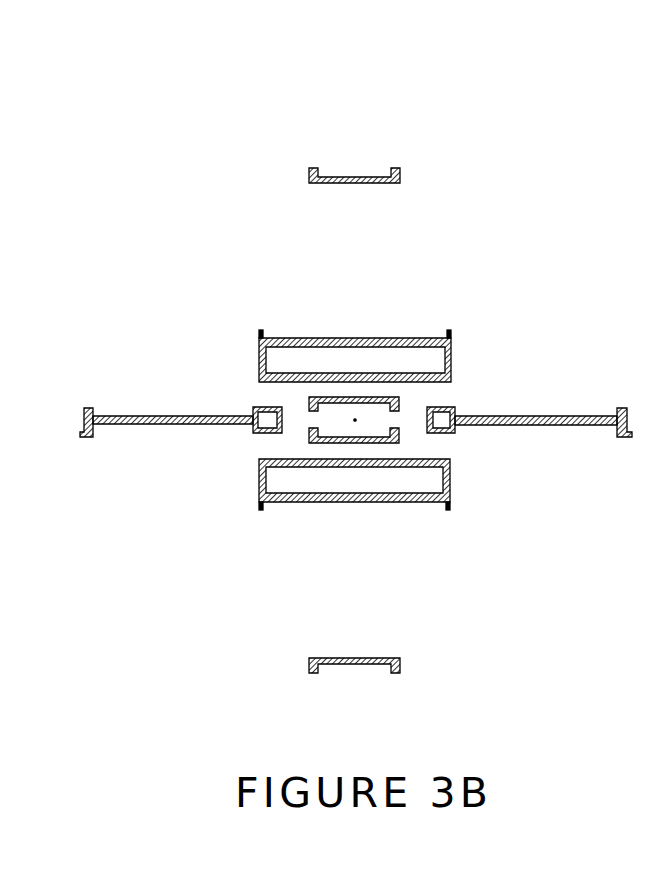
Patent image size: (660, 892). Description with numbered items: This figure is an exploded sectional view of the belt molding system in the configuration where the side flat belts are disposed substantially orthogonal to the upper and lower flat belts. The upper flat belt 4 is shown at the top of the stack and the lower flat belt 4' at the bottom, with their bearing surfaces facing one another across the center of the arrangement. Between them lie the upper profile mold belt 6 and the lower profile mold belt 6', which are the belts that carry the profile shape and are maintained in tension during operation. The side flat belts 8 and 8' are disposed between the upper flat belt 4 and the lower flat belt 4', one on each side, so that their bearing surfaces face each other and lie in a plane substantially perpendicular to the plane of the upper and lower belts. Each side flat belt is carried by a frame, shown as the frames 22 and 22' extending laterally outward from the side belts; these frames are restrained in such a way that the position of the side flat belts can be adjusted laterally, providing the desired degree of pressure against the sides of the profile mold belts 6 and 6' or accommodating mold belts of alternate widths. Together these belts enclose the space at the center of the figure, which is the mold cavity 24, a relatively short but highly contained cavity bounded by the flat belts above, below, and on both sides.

The upper flat belt 4 is at (319, 345).
The lower flat belt 4' is at (386, 494).
The upper profile mold belt 6 is at (387, 241).
The lower profile mold belt 6' is at (332, 550).
The side flat belt 8 is at (212, 393).
The side flat belt 8' is at (503, 450).
The frame 22 is at (553, 389).
The frame 22' is at (144, 466).
The mold cavity 24 is at (340, 418).